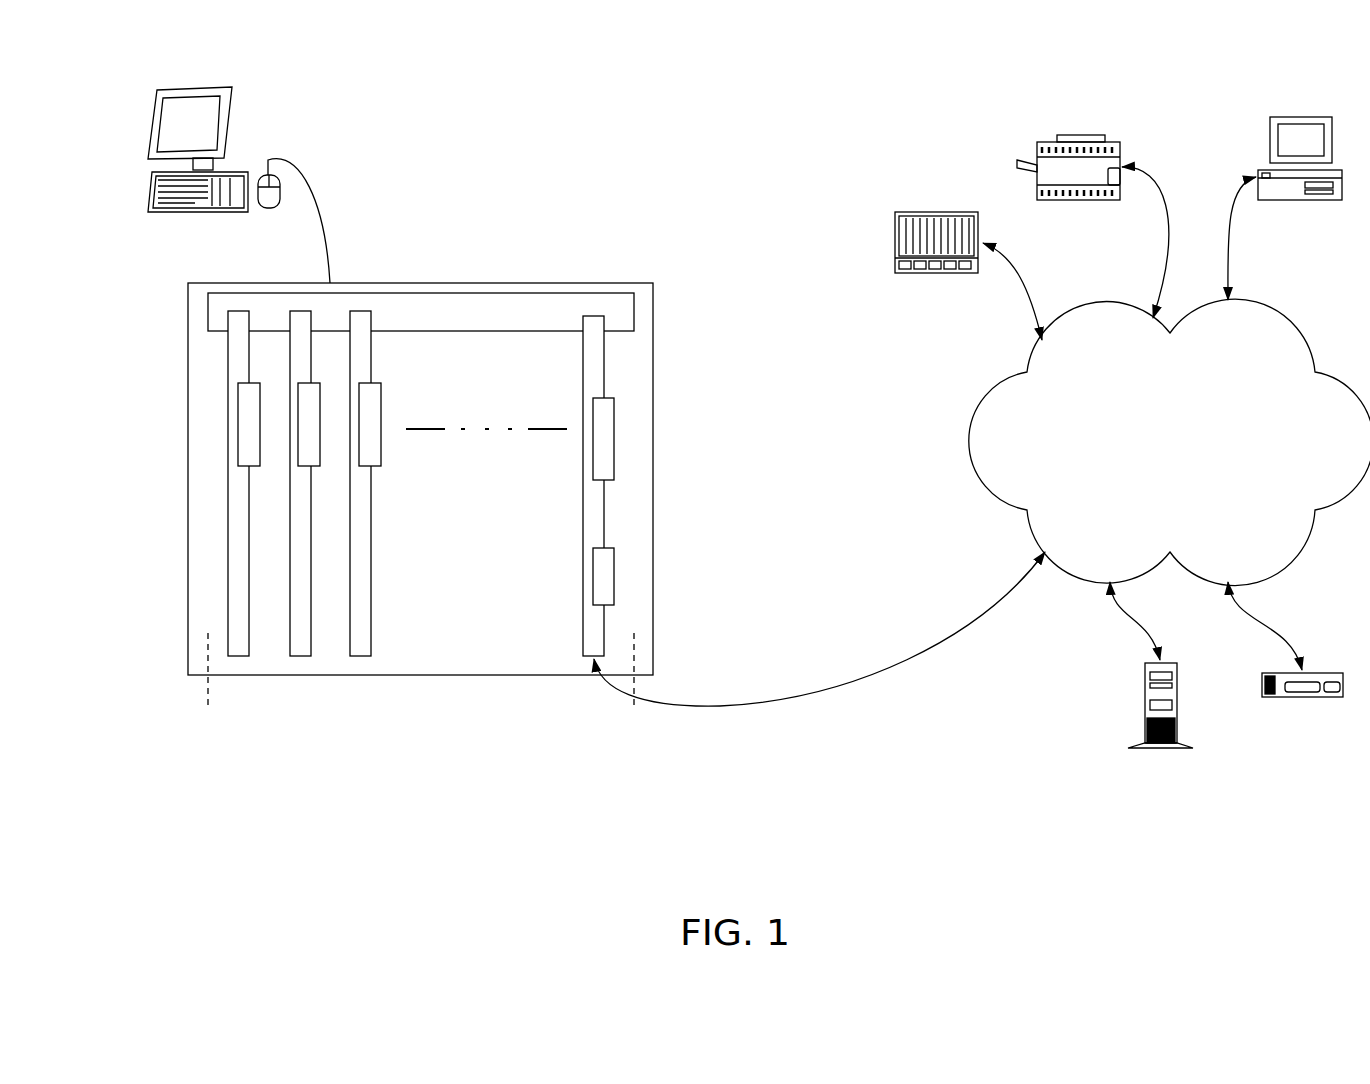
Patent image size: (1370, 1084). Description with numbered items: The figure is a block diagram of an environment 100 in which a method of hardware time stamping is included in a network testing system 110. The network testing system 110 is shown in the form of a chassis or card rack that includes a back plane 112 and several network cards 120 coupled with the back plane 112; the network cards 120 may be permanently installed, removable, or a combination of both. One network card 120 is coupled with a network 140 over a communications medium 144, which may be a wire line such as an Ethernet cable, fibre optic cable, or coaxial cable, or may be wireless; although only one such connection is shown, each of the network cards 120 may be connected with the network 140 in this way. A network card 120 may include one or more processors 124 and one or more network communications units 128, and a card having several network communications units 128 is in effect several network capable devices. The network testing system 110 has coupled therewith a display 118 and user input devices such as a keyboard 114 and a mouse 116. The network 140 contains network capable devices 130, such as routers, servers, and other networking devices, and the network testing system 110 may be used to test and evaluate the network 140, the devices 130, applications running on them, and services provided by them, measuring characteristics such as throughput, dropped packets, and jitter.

The environment 100 is at (768, 131).
The network testing system 110 is at (368, 283).
The back plane 112 is at (420, 312).
The keyboard 114 is at (150, 190).
The mouse 116 is at (268, 210).
The display 118 is at (153, 128).
The network cards 120 is at (208, 707).
The processor 124 is at (614, 440).
The network communications unit 128 is at (614, 576).
The network capable device 130 is at (1119, 465).
The network 140 is at (1169, 442).
The communications medium 144 is at (752, 708).